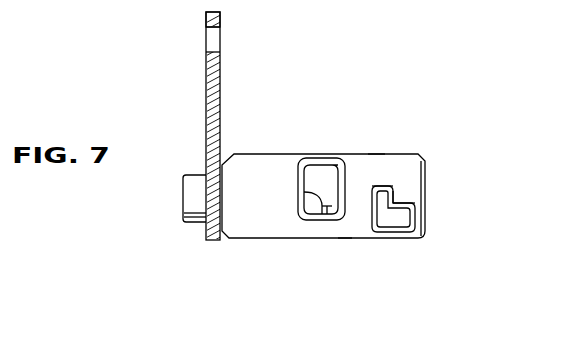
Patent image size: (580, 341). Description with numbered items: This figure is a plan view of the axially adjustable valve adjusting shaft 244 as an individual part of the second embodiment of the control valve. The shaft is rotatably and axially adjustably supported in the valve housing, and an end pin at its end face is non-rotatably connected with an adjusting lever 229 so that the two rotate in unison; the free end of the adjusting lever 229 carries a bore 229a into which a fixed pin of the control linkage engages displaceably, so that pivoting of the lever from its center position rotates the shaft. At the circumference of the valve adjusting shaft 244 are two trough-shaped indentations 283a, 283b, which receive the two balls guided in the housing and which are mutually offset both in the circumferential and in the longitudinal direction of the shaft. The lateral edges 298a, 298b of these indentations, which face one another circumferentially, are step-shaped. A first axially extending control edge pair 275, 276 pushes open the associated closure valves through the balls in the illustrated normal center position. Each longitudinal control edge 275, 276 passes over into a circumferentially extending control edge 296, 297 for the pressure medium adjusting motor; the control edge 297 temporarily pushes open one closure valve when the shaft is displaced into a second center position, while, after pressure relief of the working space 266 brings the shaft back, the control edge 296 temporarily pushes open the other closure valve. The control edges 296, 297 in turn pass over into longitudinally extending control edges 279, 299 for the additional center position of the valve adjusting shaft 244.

The working space 266 is at (13, 0).
The adjusting lever 229 is at (206, 88).
The bore 229a is at (221, 40).
The valve adjusting shaft 244 is at (292, 153).
The control edge 275 is at (310, 208).
The control edge 279 is at (311, 190).
The trough-shaped indentation 283a is at (318, 175).
The trough-shaped indentation 283b is at (394, 226).
The second control edge 296 is at (330, 214).
The lateral edge 298a is at (346, 220).
The lateral edge 298b is at (377, 180).
The control edge 276 is at (391, 187).
The control edge 297 is at (396, 193).
The control edge 299 is at (403, 199).